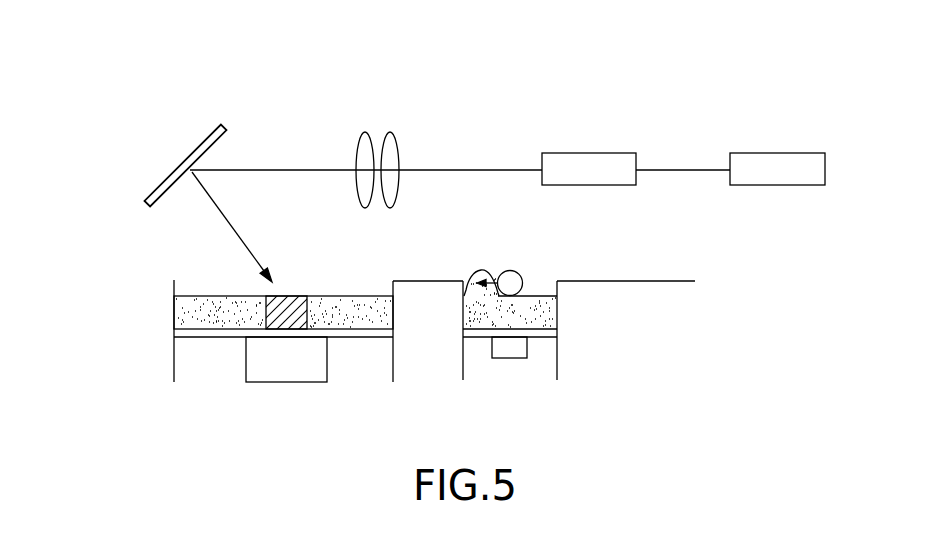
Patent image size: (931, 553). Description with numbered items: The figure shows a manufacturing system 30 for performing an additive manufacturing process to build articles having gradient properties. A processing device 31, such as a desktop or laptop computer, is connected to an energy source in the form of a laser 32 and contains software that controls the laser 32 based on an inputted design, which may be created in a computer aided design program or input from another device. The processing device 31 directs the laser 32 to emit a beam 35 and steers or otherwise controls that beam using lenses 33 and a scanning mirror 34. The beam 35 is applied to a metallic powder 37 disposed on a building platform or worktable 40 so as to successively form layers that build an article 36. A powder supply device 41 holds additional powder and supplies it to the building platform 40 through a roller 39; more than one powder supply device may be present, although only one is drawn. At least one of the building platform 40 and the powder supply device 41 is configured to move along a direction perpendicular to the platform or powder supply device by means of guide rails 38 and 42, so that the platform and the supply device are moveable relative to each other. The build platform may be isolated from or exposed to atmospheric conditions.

The manufacturing system 30 is at (150, 140).
The processing device 31 is at (777, 153).
The laser 32 is at (588, 153).
The lenses 33 is at (365, 132).
The scanning mirror 34 is at (203, 137).
The beam 35 is at (222, 217).
The article 36 is at (285, 308).
The metallic powder 37 is at (340, 308).
The guide rail 38 is at (290, 367).
The roller 39 is at (508, 277).
The building platform 40 is at (352, 334).
The powder supply device 41 is at (547, 313).
The guide rail 42 is at (508, 358).